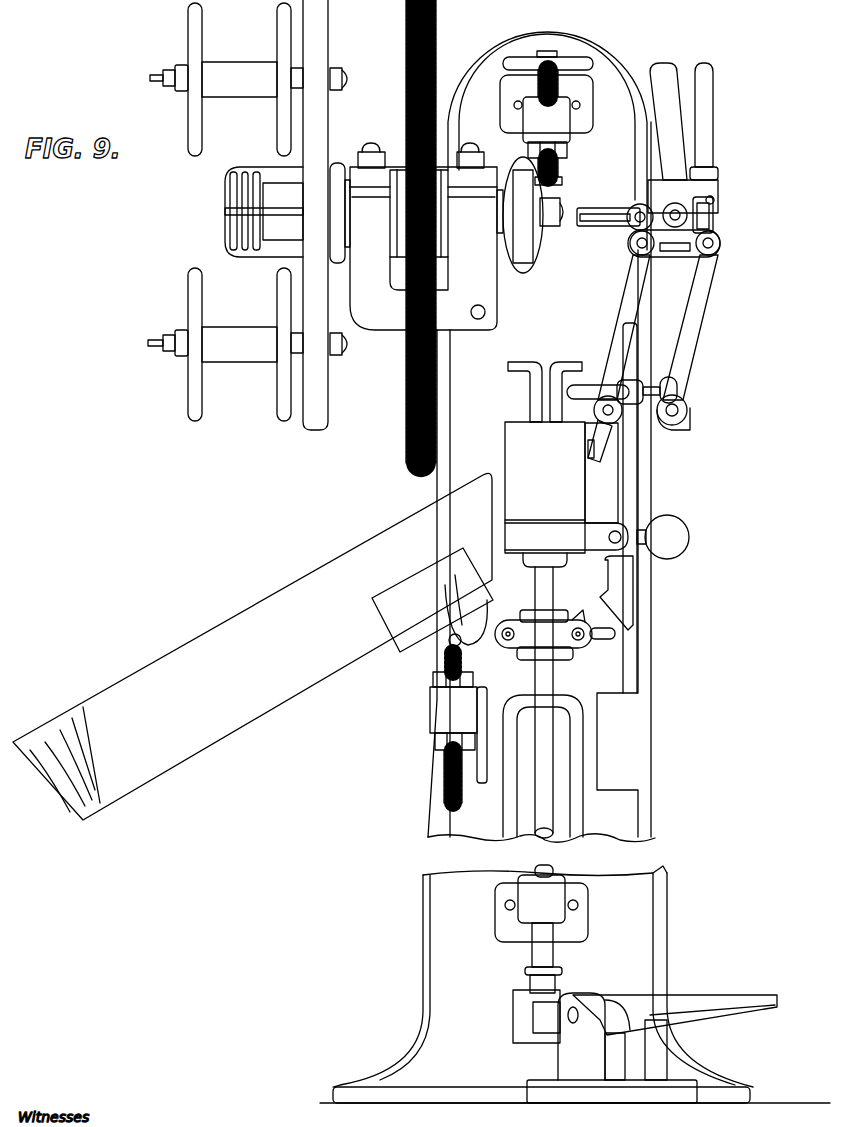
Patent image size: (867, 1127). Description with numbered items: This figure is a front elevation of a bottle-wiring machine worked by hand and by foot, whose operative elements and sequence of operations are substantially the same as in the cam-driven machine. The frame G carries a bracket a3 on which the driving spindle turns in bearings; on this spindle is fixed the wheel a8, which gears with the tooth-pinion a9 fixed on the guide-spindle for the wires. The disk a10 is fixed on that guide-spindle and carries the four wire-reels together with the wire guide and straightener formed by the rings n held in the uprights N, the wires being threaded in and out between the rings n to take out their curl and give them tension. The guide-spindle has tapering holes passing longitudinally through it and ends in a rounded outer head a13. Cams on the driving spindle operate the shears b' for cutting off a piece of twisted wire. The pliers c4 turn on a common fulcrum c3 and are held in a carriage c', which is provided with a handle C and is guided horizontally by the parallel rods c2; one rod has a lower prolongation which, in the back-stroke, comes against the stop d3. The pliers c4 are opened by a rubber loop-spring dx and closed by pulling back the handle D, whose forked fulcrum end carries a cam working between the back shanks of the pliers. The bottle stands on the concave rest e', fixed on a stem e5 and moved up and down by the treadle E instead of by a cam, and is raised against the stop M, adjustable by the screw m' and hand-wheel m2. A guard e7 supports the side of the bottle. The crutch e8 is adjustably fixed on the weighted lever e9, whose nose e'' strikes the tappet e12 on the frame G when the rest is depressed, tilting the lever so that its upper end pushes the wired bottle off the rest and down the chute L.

The bracket a3 is at (423, 236).
The wheel a8 is at (433, 231).
The tooth-pinion a9 is at (419, 213).
The disk a10 is at (317, 215).
The rounded outer head a13 is at (530, 215).
The uprights N is at (225, 212).
The rings n is at (232, 250).
The shears b' is at (522, 215).
The hand-wheel m2 is at (590, 62).
The screw m' is at (563, 159).
The stop M is at (562, 182).
The handle D is at (668, 121).
The handle C is at (707, 121).
The carriage c' is at (674, 218).
The parallel rods c2 is at (658, 342).
The fulcrum c3 is at (637, 226).
The pliers c4 is at (608, 226).
The rubber loop-spring dx is at (713, 214).
The stop d3 is at (605, 429).
The bottle-rest e' is at (566, 494).
The stem e5 is at (553, 683).
The guard e7 is at (555, 389).
The crutch e8 is at (622, 389).
The lever e9 is at (640, 490).
The nose e'' is at (642, 593).
The tappet e12 is at (605, 642).
The frame G is at (575, 567).
The chute L is at (253, 646).
The treadle E is at (760, 992).